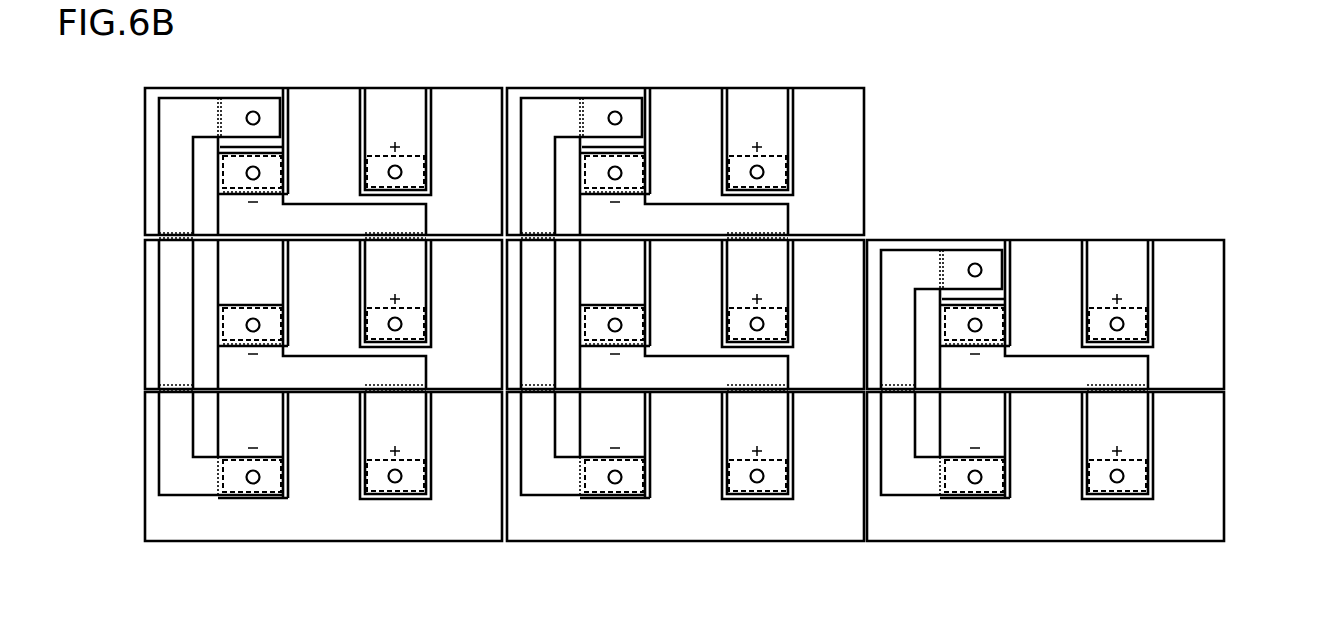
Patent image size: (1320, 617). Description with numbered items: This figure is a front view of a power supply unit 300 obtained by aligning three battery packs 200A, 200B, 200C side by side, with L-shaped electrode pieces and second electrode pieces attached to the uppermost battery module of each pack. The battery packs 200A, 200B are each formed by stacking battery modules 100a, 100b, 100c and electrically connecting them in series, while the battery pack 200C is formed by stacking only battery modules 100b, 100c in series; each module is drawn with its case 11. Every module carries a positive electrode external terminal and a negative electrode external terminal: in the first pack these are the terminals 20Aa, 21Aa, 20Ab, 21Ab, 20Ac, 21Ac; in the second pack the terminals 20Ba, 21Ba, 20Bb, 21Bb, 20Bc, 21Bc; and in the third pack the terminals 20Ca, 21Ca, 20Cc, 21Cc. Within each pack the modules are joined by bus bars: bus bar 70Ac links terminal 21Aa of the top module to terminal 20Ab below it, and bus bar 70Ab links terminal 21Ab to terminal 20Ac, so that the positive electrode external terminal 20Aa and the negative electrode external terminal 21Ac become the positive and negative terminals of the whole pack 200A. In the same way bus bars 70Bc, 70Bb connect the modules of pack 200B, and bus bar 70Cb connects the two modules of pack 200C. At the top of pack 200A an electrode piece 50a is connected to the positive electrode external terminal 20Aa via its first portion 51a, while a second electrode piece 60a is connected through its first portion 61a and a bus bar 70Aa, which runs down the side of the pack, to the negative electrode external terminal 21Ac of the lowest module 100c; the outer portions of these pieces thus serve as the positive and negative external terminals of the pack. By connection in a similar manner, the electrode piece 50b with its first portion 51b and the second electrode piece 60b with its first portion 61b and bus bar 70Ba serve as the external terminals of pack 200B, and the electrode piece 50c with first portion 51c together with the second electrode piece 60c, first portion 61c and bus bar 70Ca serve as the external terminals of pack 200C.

The power supply unit 300 is at (1193, 110).
The battery pack 200A is at (262, 548).
The battery pack 200B is at (624, 548).
The battery pack 200C is at (995, 548).
The battery module 100a is at (864, 110).
The battery module 100b is at (1225, 295).
The battery module 100c is at (1225, 438).
The cell case 11 is at (152, 153).
The second electrode piece 60a is at (262, 82).
The first portion 61a is at (232, 92).
The electrode piece 50a is at (389, 82).
The first portion 51a is at (370, 92).
The second electrode piece 60b is at (624, 82).
The first portion 61b is at (594, 92).
The electrode piece 50b is at (751, 82).
The first portion 51b is at (732, 92).
The second electrode piece 60c is at (991, 232).
The first portion 61c is at (950, 242).
The electrode piece 50c is at (1108, 232).
The first portion 51c is at (1140, 245).
The negative electrode external terminal 21Aa is at (325, 133).
The positive electrode external terminal 20Aa is at (418, 156).
The negative electrode external terminal 21Ab is at (325, 285).
The positive electrode external terminal 20Ab is at (418, 308).
The negative electrode external terminal 21Ac is at (267, 463).
The positive electrode external terminal 20Ac is at (418, 462).
The negative electrode external terminal 21Ba is at (687, 133).
The positive electrode external terminal 20Ba is at (780, 156).
The negative electrode external terminal 21Bb is at (687, 285).
The positive electrode external terminal 20Bb is at (780, 308).
The negative electrode external terminal 21Bc is at (629, 463).
The positive electrode external terminal 20Bc is at (780, 462).
The negative electrode external terminal 21Ca is at (999, 299).
The positive electrode external terminal 20Ca is at (1140, 308).
The negative electrode external terminal 21Cc is at (989, 463).
The positive electrode external terminal 20Cc is at (1140, 462).
The bus bar 70Aa is at (185, 485).
The bus bar 70Ab is at (237, 365).
The bus bar 70Ac is at (237, 215).
The bus bar 70Ba is at (547, 485).
The bus bar 70Bb is at (718, 455).
The bus bar 70Bc is at (780, 215).
The bus bar 70Ca is at (907, 487).
The bus bar 70Cb is at (1142, 370).